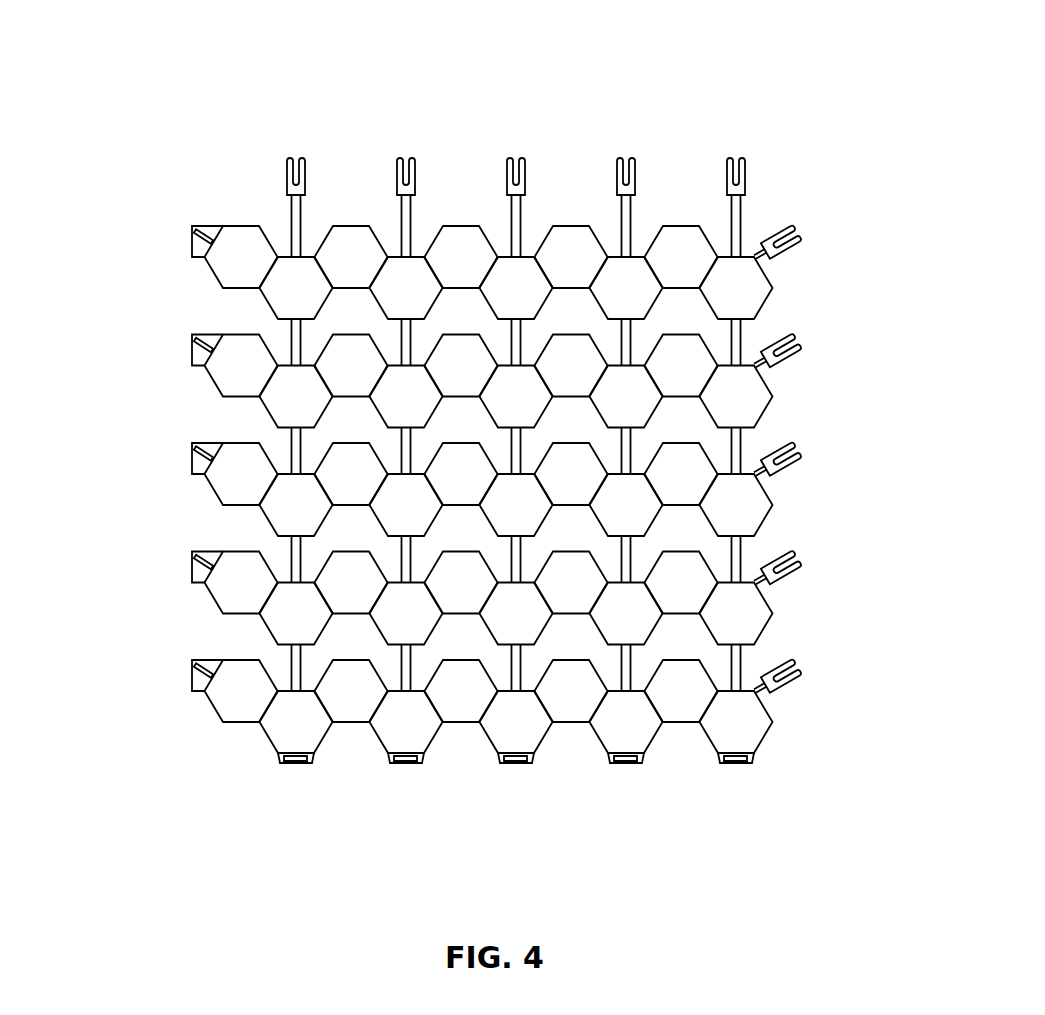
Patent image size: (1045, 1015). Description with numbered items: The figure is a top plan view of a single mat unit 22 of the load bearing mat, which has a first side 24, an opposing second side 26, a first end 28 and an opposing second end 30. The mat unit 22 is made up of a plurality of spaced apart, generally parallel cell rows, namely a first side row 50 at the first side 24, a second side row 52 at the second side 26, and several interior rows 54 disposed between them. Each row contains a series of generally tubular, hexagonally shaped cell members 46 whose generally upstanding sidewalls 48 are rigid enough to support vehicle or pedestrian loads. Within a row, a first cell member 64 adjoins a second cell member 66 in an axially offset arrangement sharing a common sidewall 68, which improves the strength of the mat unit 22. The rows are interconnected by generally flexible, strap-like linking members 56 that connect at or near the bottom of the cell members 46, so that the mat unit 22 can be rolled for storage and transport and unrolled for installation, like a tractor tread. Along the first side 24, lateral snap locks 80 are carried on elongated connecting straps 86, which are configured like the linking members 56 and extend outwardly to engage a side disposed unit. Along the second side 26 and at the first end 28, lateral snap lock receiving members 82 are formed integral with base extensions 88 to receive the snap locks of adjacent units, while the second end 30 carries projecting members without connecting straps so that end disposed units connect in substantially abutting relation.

The mat unit 22 is at (790, 205).
The first side 24 is at (532, 100).
The second side 26 is at (450, 782).
The first end 28 is at (118, 531).
The second end 30 is at (825, 489).
The cell member 46 is at (658, 745).
The sidewall 48 is at (207, 605).
The first side row 50 is at (188, 267).
The second side row 52 is at (190, 710).
The interior row 54 is at (192, 593).
The linking member 56 is at (295, 342).
The first cell member 64 is at (768, 278).
The second cell member 66 is at (680, 226).
The common sidewall 68 is at (708, 273).
The lateral snap lock 80 is at (304, 168).
The lateral snap lock receiving member 82 is at (290, 763).
The connecting strap 86 is at (411, 214).
The base extension 88 is at (205, 230).